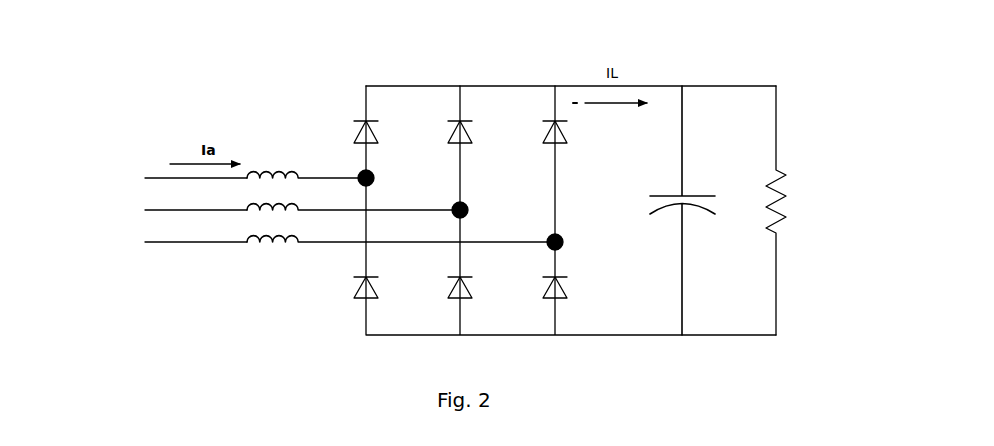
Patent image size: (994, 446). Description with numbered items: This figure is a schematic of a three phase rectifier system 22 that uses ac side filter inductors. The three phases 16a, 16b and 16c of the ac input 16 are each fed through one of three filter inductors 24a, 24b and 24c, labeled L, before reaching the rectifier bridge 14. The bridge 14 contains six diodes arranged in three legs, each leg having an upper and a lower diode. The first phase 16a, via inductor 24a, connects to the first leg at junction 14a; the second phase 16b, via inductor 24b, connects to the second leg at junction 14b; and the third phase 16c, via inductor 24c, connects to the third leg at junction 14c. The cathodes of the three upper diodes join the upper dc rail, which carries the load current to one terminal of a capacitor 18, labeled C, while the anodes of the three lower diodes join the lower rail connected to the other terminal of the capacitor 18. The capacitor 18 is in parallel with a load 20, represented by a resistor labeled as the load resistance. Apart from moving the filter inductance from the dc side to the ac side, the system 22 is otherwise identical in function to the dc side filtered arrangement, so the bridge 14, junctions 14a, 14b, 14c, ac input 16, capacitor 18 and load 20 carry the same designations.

The ac input 16 is at (105, 271).
The input phase 16a is at (145, 167).
The input phase 16b is at (160, 214).
The input phase 16c is at (155, 247).
The filter inductor 24a is at (260, 163).
The filter inductor 24b is at (287, 213).
The filter inductor 24c is at (257, 248).
The bridge 14 is at (383, 252).
The junction 14a is at (380, 178).
The junction 14b is at (472, 210).
The junction 14c is at (568, 242).
The three phase rectifier system 22 is at (518, 67).
The capacitor 18 is at (688, 183).
The load 20 is at (793, 187).